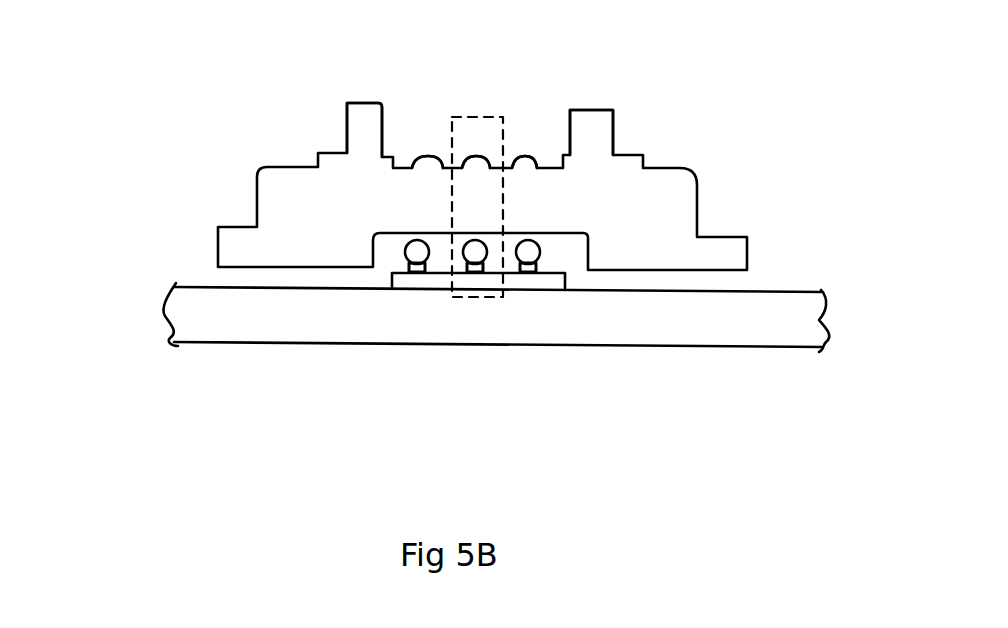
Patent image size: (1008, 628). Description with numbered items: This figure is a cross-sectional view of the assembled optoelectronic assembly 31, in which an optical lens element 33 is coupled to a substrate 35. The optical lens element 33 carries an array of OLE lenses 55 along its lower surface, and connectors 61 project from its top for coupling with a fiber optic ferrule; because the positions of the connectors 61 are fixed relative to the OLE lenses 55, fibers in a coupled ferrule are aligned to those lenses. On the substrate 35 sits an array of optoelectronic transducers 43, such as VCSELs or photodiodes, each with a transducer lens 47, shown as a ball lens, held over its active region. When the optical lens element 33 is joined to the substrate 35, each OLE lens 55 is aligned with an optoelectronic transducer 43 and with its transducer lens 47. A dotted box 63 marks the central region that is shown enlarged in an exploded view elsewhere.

The optoelectronic assembly 31 is at (183, 143).
The optical lens element 33 is at (750, 238).
The substrate 35 is at (835, 326).
The optoelectronic transducer 43 is at (533, 272).
The transducer lens 47 is at (407, 244).
The OLE lens 55 is at (527, 157).
The connector 61 is at (354, 128).
The dotted box 63 is at (489, 118).